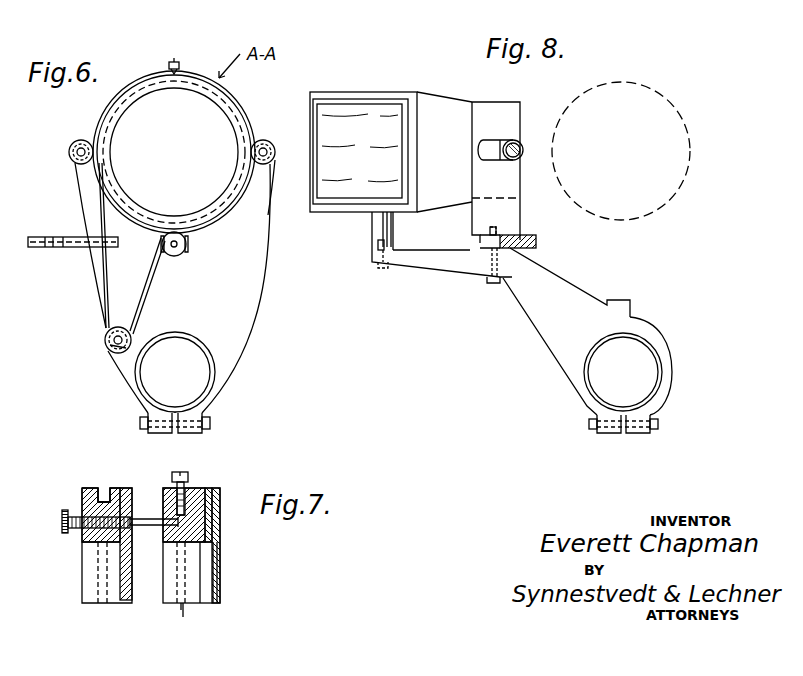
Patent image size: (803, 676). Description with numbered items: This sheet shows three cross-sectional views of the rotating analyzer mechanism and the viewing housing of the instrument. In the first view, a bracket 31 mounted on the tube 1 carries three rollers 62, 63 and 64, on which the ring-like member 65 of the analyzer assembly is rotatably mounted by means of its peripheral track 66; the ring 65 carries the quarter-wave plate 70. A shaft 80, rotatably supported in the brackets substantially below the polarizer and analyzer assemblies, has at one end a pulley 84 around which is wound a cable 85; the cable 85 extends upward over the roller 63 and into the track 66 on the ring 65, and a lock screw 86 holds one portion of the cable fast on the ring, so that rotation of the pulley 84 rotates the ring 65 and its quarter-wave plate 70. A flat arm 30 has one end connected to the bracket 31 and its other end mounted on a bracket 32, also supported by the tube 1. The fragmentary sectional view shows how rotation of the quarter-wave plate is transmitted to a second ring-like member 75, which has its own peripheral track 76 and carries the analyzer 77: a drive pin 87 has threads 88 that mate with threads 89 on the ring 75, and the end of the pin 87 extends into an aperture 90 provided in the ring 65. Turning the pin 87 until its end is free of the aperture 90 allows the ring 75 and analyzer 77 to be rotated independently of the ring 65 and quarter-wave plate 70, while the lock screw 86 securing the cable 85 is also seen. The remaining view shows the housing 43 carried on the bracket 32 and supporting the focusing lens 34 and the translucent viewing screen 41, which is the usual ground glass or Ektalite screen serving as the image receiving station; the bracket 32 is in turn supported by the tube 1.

In FIG. 6, the tube 1 is at (213, 367).
In FIG. 8, the tube 1 is at (665, 373).
In FIG. 6, the arm 30 is at (52, 249).
In FIG. 8, the arm 30 is at (538, 243).
In FIG. 6, the bracket 31 is at (90, 291).
In FIG. 8, the bracket 32 is at (525, 315).
In FIG. 8, the focusing lens 34 is at (517, 142).
In FIG. 8, the translucent viewing screen 41 is at (352, 112).
In FIG. 8, the housing 43 is at (448, 96).
In FIG. 6, the roller 62 is at (270, 142).
In FIG. 6, the roller 63 is at (188, 250).
In FIG. 6, the roller 64 is at (69, 150).
In FIG. 6, the ring-like member 65 is at (240, 108).
In FIG. 7, the ring-like member 65 is at (220, 491).
In FIG. 6, the peripheral track 66 is at (239, 93).
In FIG. 7, the peripheral track 66 is at (195, 492).
In FIG. 6, the quarter-wave plate 70 is at (141, 97).
In FIG. 7, the quarter-wave plate 70 is at (218, 578).
In FIG. 7, the ring-like member 75 is at (83, 540).
In FIG. 7, the peripheral track 76 is at (107, 489).
In FIG. 7, the analyzer 77 is at (123, 590).
In FIG. 6, the shaft 80 is at (105, 340).
In FIG. 6, the pulley 84 is at (115, 347).
In FIG. 6, the cable 85 is at (142, 301).
In FIG. 7, the cable 85 is at (185, 613).
In FIG. 6, the lock screw 86 is at (177, 64).
In FIG. 7, the lock screw 86 is at (180, 471).
In FIG. 7, the drive pin 87 is at (60, 522).
In FIG. 7, the threads 88 is at (82, 508).
In FIG. 7, the threads 89 is at (102, 545).
In FIG. 7, the aperture 90 is at (163, 507).